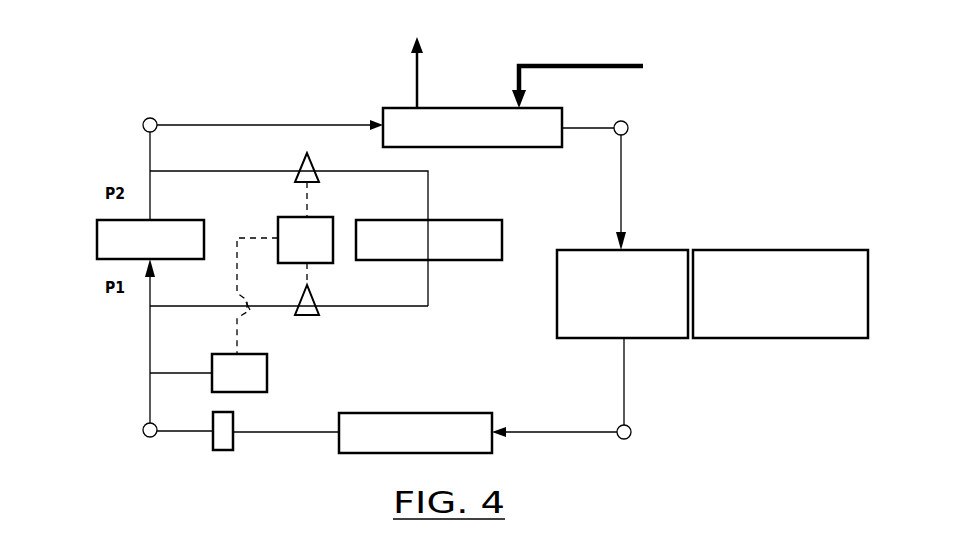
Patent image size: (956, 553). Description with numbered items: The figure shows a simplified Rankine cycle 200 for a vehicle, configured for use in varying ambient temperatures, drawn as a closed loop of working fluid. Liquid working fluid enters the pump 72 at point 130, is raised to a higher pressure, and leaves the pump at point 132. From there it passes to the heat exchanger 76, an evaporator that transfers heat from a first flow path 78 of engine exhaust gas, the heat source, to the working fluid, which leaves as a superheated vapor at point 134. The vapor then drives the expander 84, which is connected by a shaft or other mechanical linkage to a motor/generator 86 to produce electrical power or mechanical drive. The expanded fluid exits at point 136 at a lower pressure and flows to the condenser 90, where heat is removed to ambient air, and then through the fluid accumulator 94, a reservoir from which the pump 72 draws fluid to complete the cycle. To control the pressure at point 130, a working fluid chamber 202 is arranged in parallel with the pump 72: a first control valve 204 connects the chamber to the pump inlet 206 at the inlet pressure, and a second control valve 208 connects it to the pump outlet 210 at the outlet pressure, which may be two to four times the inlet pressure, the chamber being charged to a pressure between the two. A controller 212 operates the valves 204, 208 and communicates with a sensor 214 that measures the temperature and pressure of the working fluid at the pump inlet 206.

The cycle 200 is at (190, 46).
The pump 72 is at (97, 240).
The heat exchanger 76 is at (520, 148).
The first flow path 78 is at (574, 65).
The expander 84 is at (652, 250).
The motor/generator 86 is at (773, 250).
The condenser 90 is at (465, 413).
The fluid accumulator 94 is at (220, 412).
The point 130 is at (143, 430).
The point 132 is at (143, 125).
The point 134 is at (630, 127).
The point 136 is at (632, 430).
The working fluid chamber 202 is at (470, 262).
The first control valve 204 is at (318, 312).
The inlet 206 is at (150, 306).
The second control valve 208 is at (295, 180).
The outlet 210 is at (150, 171).
The controller 212 is at (305, 240).
The sensor 214 is at (268, 373).